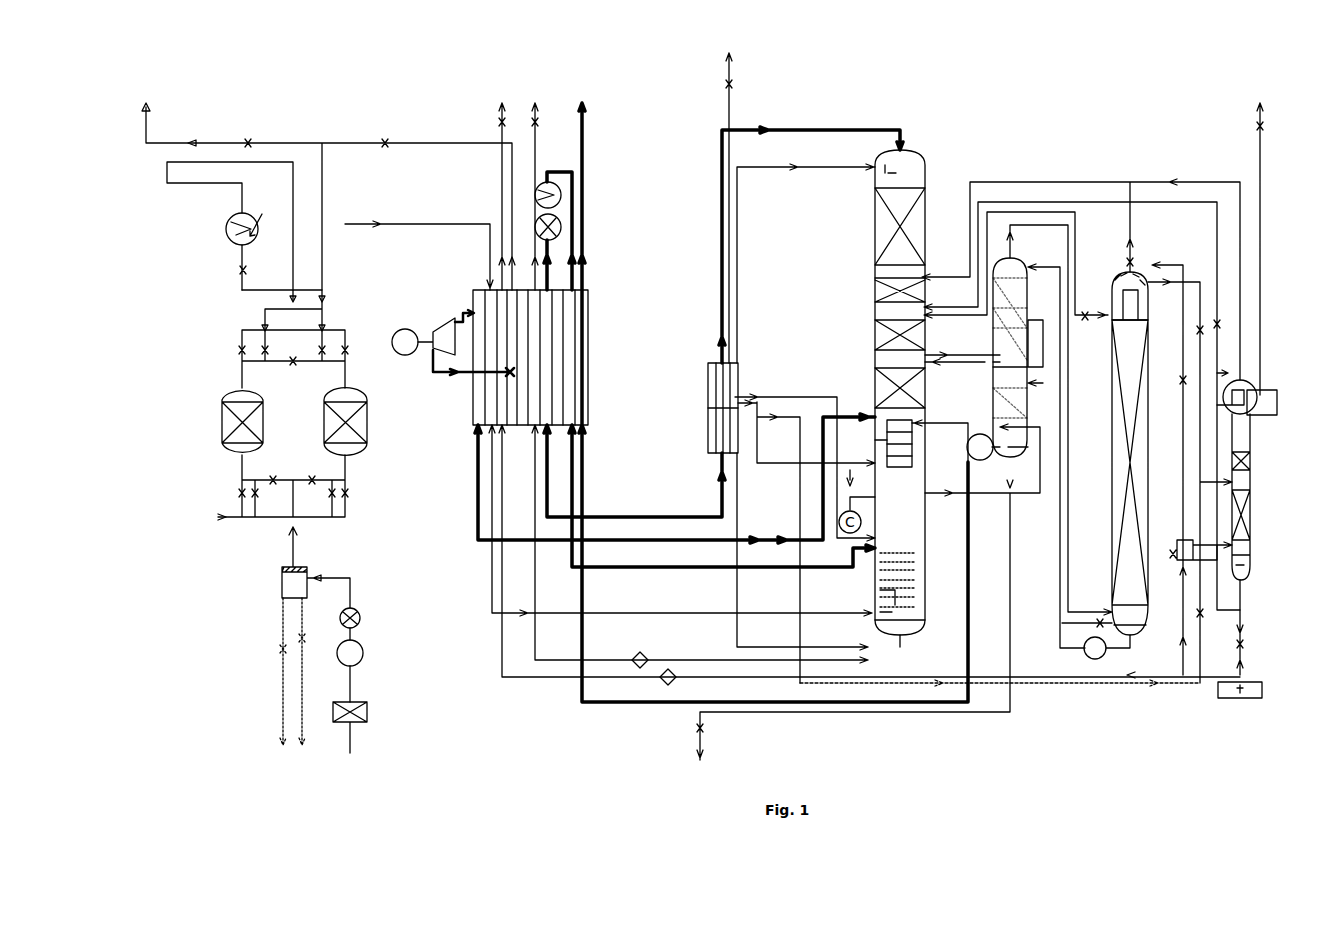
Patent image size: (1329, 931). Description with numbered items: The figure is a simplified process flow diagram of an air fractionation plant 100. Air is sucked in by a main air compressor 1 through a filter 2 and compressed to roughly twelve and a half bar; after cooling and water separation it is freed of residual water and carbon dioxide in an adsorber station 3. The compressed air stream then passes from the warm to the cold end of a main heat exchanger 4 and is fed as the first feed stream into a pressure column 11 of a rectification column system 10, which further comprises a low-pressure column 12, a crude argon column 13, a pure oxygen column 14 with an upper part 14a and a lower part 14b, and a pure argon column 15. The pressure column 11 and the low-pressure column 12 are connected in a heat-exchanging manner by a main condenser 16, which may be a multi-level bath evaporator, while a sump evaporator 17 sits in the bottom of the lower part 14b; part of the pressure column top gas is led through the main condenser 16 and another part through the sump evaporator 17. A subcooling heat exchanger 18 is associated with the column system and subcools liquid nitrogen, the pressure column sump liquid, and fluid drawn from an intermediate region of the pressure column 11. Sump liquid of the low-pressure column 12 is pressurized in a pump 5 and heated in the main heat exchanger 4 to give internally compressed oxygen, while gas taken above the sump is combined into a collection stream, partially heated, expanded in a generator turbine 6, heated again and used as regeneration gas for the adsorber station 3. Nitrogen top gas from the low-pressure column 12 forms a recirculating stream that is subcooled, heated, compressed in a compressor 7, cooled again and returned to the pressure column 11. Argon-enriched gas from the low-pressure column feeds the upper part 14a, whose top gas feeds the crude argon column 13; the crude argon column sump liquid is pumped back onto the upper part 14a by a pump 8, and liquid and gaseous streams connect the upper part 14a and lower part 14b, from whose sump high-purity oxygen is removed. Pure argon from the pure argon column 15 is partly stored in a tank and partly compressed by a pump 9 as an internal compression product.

The air fractionation plant 100 is at (380, 81).
The main air compressor 1 is at (365, 648).
The filter 2 is at (367, 714).
The adsorber station 3 is at (202, 417).
The main heat exchanger 4 is at (590, 336).
The pump 5 is at (640, 652).
The generator turbine 6 is at (421, 368).
The compressor 7 is at (564, 221).
The pump 8 is at (1091, 660).
The pump 9 is at (664, 686).
The rectification column system 10 is at (838, 287).
The pressure column 11 is at (870, 609).
The low-pressure column 12 is at (870, 361).
The crude argon column 13 is at (1112, 425).
The pure oxygen column 14 is at (1020, 259).
The upper part 14a is at (990, 353).
The lower part 14b is at (990, 407).
The pure argon column 15 is at (1251, 517).
The main condenser 16 is at (915, 438).
The sump evaporator 17 is at (1000, 460).
The subcooling heat exchanger 18 is at (708, 390).